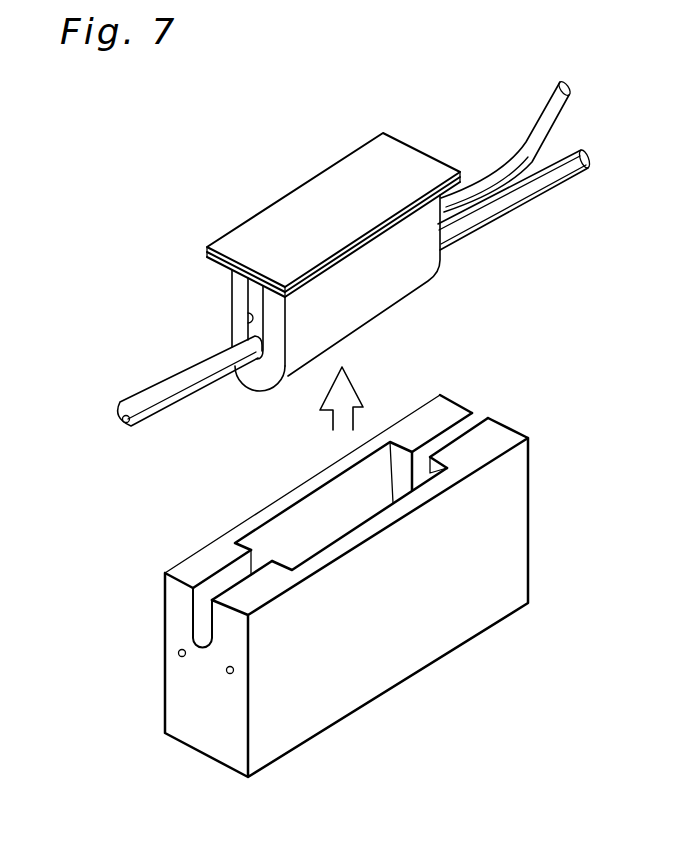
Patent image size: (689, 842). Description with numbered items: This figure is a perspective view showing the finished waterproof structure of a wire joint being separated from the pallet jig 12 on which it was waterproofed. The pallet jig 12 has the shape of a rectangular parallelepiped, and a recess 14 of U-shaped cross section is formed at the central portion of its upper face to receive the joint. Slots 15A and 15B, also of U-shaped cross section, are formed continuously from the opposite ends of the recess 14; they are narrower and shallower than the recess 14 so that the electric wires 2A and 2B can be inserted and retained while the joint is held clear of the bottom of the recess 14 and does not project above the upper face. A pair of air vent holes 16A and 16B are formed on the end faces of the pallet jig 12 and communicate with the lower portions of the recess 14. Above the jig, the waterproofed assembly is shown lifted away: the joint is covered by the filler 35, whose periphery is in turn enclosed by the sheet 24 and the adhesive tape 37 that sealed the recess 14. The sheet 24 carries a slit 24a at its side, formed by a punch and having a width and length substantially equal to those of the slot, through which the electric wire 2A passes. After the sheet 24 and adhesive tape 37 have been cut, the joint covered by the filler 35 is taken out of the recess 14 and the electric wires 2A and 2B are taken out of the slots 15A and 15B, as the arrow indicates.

The electric wire 2A is at (187, 391).
The electric wire 2B is at (518, 155).
The pallet jig 12 is at (513, 566).
The recess 14 is at (298, 517).
The slot 15A is at (216, 582).
The slot 15B is at (458, 430).
The air vent hole 16A is at (178, 655).
The air vent hole 16B is at (233, 674).
The sheet 24 is at (232, 303).
The slit 24a is at (249, 326).
The filler 35 is at (250, 273).
The adhesive tape 37 is at (260, 231).